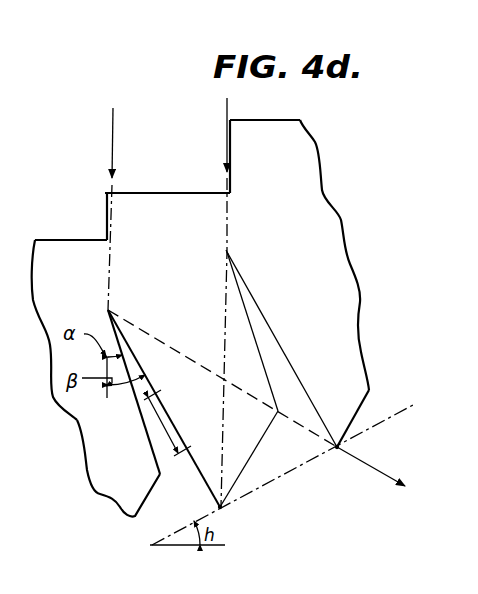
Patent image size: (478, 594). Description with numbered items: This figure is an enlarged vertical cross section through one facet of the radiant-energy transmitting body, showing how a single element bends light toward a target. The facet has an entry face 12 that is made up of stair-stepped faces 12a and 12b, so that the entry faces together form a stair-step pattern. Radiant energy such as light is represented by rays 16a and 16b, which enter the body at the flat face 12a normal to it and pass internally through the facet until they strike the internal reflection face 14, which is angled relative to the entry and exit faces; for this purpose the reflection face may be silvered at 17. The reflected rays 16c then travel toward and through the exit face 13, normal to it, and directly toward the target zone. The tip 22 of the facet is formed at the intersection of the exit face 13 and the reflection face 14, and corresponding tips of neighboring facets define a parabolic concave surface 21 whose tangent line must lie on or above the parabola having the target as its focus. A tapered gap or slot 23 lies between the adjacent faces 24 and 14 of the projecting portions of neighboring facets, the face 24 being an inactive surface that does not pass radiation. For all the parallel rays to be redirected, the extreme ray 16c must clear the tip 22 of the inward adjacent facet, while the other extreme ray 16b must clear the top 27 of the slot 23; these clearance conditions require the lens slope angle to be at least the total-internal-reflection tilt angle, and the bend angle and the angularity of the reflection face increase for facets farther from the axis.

The entry face 12 is at (191, 154).
The flat entry face 12a is at (144, 192).
The stair-stepped entry face 12b is at (280, 119).
The exit face 13 is at (246, 468).
The internal reflection face 14 is at (196, 455).
The ray 16a is at (112, 141).
The ray 16b is at (226, 110).
The reflected ray 16c is at (153, 336).
The silvering 17 is at (152, 434).
The concave surface 21 is at (382, 424).
The tip 22 is at (222, 508).
The tapered gap 23 is at (287, 384).
The inactive face 24 is at (249, 315).
The top of slot 27 is at (232, 252).